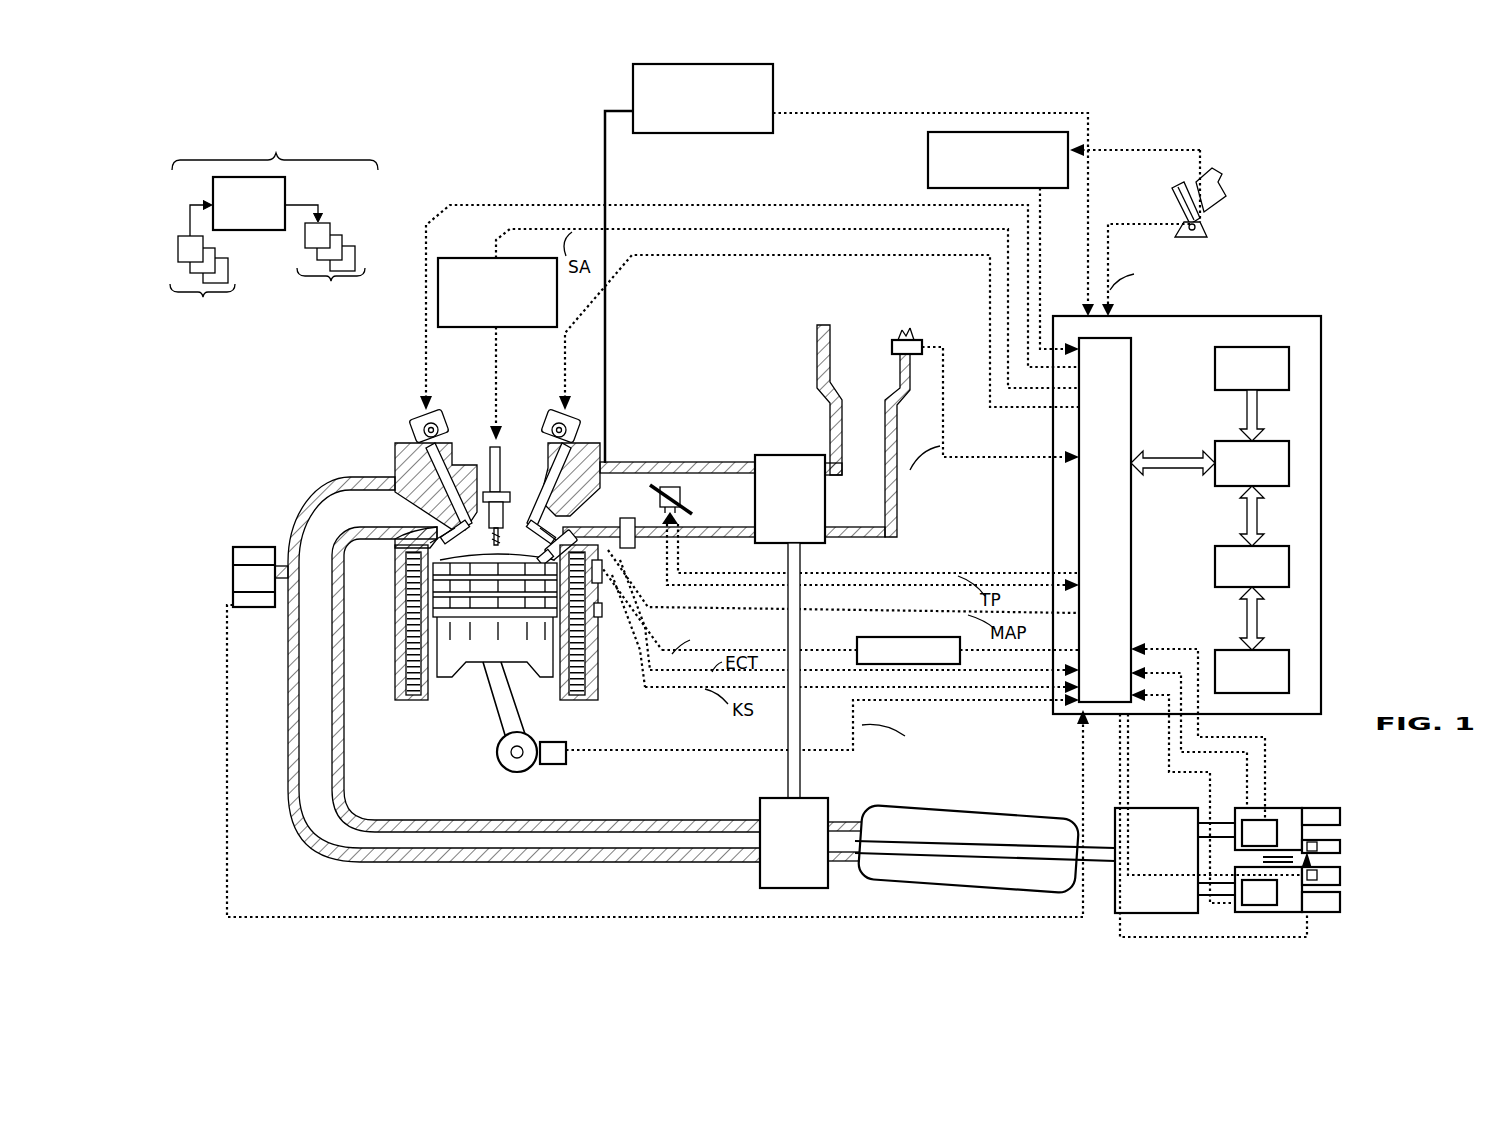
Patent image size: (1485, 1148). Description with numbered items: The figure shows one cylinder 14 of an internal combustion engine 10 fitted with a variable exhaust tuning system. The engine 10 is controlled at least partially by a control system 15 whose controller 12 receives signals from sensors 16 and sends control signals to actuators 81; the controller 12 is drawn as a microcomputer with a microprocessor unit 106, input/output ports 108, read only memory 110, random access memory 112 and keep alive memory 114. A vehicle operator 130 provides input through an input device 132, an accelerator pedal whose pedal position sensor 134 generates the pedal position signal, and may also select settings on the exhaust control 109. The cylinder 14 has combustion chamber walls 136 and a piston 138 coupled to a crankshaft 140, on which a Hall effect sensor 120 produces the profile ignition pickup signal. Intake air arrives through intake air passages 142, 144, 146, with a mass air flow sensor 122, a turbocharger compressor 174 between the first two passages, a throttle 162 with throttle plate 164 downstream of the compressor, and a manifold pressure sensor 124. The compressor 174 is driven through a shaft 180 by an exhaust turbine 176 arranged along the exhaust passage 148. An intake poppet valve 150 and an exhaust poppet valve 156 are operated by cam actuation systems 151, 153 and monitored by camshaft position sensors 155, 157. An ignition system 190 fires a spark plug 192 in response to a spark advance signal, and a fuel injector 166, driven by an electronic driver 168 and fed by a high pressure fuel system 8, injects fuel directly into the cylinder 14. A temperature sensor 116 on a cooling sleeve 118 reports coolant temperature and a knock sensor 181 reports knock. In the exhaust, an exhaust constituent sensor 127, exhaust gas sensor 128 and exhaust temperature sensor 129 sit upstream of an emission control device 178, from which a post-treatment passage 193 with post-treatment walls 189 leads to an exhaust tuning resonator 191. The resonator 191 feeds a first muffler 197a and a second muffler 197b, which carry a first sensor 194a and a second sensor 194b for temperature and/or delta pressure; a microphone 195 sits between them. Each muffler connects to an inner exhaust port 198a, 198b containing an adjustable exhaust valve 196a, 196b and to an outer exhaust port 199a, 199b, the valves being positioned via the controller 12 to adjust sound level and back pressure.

The high pressure fuel system 8 is at (775, 81).
The internal combustion engine 10 is at (523, 138).
The controller 12 is at (1228, 501).
The cylinder 14 is at (395, 578).
The control system 15 is at (260, 215).
The sensors 16 is at (166, 279).
The actuators 81 is at (339, 264).
The microprocessor unit 106 is at (1291, 463).
The input/output ports 108 is at (1135, 342).
The exhaust control 109 is at (1032, 132).
The read only memory 110 is at (1291, 368).
The random access memory 112 is at (1291, 567).
The keep alive memory 114 is at (1291, 672).
The temperature sensor 116 is at (600, 600).
The cooling sleeve 118 is at (600, 600).
The Hall effect sensor 120 is at (550, 770).
The mass air flow sensor 122 is at (915, 332).
The manifold absolute pressure sensor 124 is at (632, 548).
The exhaust constituent sensor 127 is at (233, 556).
The exhaust gas sensor 128 is at (233, 576).
The exhaust temperature sensor 129 is at (233, 600).
The vehicle operator 130 is at (1224, 190).
The input device 132 is at (1176, 204).
The pedal position sensor 134 is at (1208, 227).
The combustion chamber walls 136 is at (428, 692).
The piston 138 is at (486, 652).
The crankshaft 140 is at (505, 770).
The intake air passage 142 is at (882, 374).
The intake air passage 144 is at (746, 511).
The intake air passage 146 is at (644, 511).
The exhaust passage 148 is at (382, 519).
The intake poppet valve 150 is at (505, 500).
The cam actuation system 151 is at (552, 414).
The cam actuation system 153 is at (440, 412).
The camshaft position sensor 155 is at (585, 424).
The exhaust poppet valve 156 is at (450, 528).
The camshaft position sensor 157 is at (420, 452).
The throttle 162 is at (684, 488).
The throttle plate 164 is at (664, 486).
The fuel injector 166 is at (563, 536).
The electronic driver 168 is at (857, 641).
The compressor 174 is at (775, 455).
The exhaust turbine 176 is at (760, 876).
The emission control device 178 is at (1038, 822).
The shaft 180 is at (803, 764).
The knock sensor 181 is at (604, 620).
The post-treatment walls 189 is at (1083, 900).
The ignition system 190 is at (455, 258).
The exhaust tuning resonator 191 is at (1140, 808).
The spark plug 192 is at (490, 470).
The post-treatment passage 193 is at (1097, 857).
The first temperature sensor and/or delta pressure sensor 194a is at (1257, 820).
The second temperature sensor and/or delta pressure sensor 194b is at (1250, 906).
The microphone 195 is at (1263, 860).
The first adjustable exhaust valve 196a is at (1318, 840).
The second adjustable exhaust valve 196b is at (1328, 884).
The first muffler 197a is at (1246, 806).
The second muffler 197b is at (1305, 910).
The first muffler inner exhaust port 198a is at (1340, 846).
The second muffler inner exhaust port 198b is at (1340, 872).
The first muffler outer exhaust port 199a is at (1318, 806).
The second muffler outer exhaust port 199b is at (1340, 900).